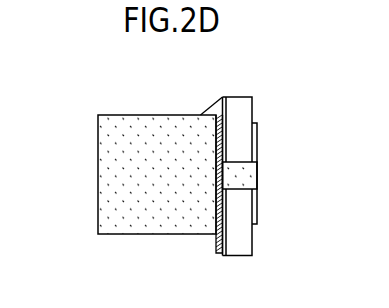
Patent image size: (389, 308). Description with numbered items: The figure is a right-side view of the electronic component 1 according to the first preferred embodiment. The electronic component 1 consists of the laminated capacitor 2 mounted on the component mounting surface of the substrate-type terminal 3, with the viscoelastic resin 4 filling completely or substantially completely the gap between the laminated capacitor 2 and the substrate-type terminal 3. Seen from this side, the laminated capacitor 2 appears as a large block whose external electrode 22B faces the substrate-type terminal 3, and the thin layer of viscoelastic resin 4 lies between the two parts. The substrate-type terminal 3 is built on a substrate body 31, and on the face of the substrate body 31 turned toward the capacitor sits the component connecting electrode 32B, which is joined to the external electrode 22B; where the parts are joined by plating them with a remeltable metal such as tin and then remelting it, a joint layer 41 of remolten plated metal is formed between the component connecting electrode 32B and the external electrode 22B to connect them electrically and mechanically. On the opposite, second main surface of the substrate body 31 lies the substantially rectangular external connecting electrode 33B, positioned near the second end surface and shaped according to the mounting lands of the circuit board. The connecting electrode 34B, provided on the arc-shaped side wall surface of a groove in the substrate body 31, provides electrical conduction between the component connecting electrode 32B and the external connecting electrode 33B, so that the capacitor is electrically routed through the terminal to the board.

The electronic component 1 is at (146, 87).
The laminated capacitor 2 is at (88, 106).
The substrate-type terminal 3 is at (263, 90).
The viscoelastic resin 4 is at (215, 237).
The external electrode 22B is at (104, 169).
The substrate body 31 is at (240, 247).
The component connecting electrode 32B is at (222, 244).
The external connecting electrode 33B is at (257, 225).
The connecting electrode 34B is at (241, 176).
The joint layer 41 is at (214, 104).